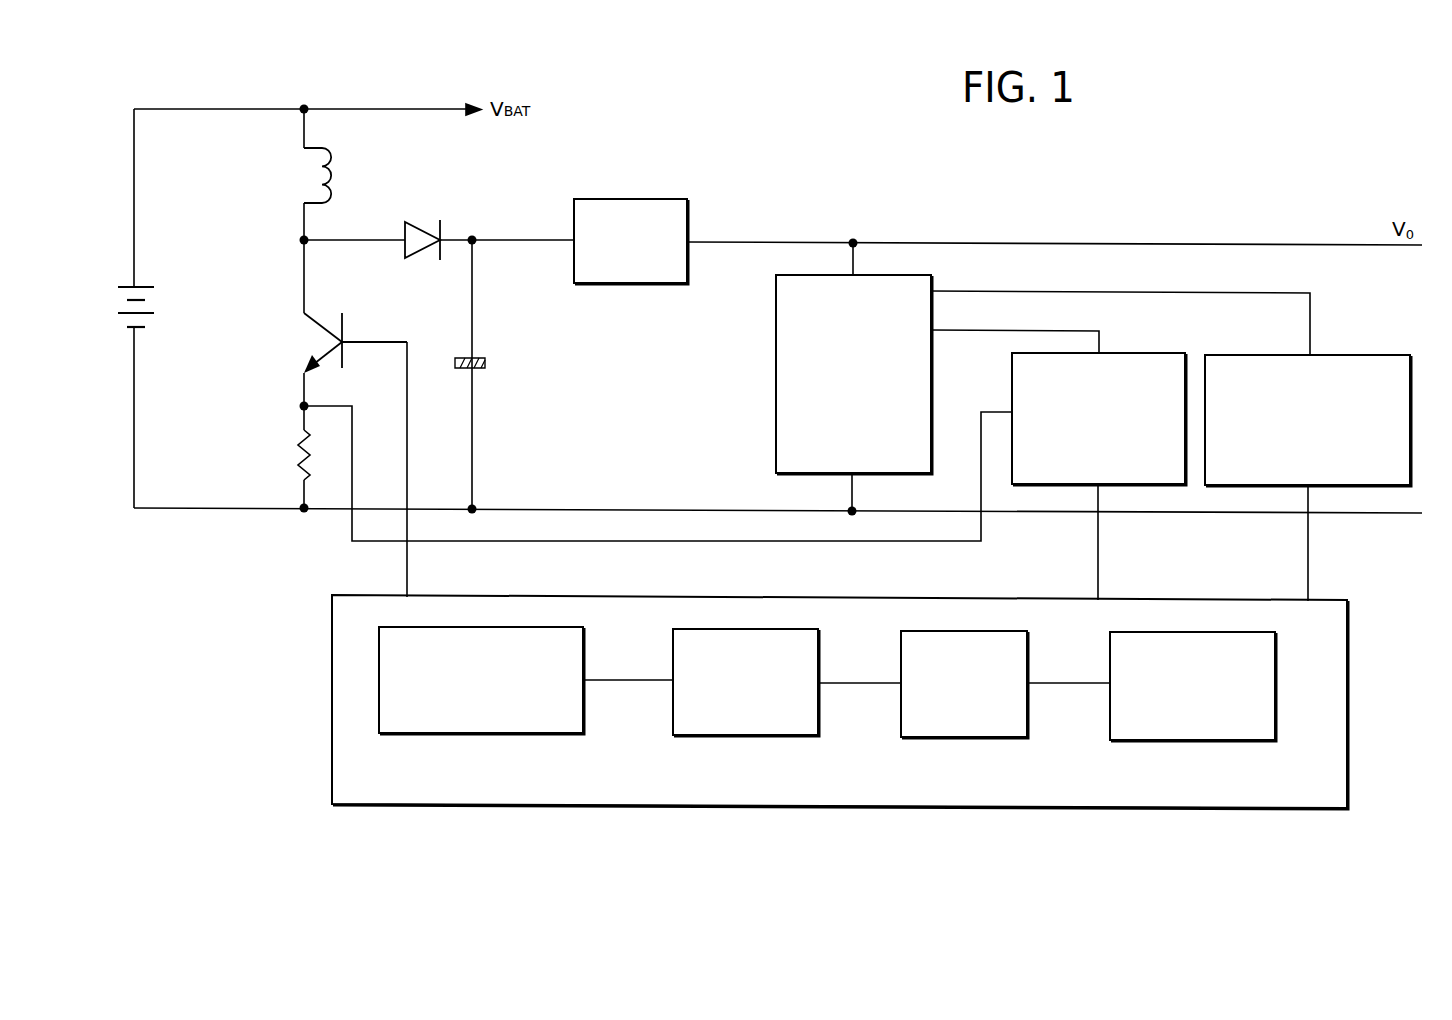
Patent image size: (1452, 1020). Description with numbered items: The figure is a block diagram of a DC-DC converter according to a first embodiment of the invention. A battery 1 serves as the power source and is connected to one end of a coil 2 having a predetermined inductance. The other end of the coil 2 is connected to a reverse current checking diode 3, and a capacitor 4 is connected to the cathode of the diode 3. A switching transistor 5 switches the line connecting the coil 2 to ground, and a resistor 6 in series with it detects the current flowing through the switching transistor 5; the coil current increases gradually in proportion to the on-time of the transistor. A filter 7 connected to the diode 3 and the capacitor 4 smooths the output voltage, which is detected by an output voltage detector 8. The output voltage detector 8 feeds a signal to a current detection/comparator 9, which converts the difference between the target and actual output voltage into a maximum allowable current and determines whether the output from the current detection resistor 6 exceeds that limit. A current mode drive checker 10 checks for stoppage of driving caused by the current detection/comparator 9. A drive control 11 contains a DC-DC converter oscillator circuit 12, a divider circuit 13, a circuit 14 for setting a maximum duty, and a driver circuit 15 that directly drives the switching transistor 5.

The battery 1 is at (148, 283).
The coil 2 is at (334, 153).
The reverse current checking diode 3 is at (420, 222).
The capacitor 4 is at (486, 357).
The switching transistor 5 is at (314, 326).
The resistor 6 is at (298, 452).
The filter 7 is at (637, 197).
The output voltage detector 8 is at (775, 387).
The current detection/comparator 9 is at (1136, 352).
The current mode drive checker 10 is at (1373, 354).
The drive control 11 is at (1335, 600).
The DC-DC converter oscillator circuit 12 is at (1277, 658).
The divider circuit 13 is at (1029, 657).
The circuit for setting a maximum duty 14 is at (820, 656).
The driver circuit 15 is at (585, 653).